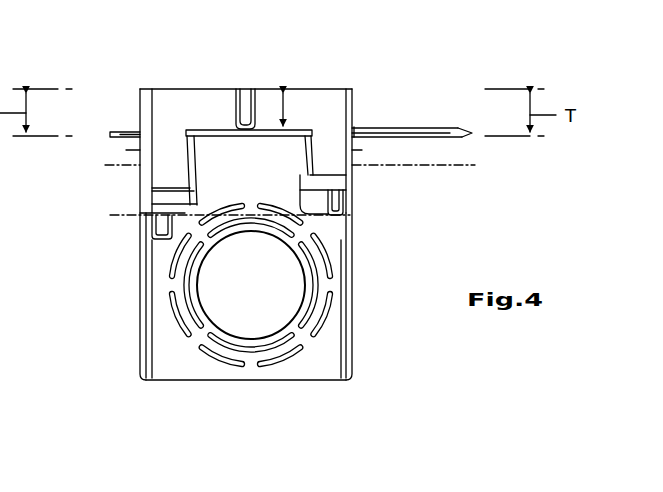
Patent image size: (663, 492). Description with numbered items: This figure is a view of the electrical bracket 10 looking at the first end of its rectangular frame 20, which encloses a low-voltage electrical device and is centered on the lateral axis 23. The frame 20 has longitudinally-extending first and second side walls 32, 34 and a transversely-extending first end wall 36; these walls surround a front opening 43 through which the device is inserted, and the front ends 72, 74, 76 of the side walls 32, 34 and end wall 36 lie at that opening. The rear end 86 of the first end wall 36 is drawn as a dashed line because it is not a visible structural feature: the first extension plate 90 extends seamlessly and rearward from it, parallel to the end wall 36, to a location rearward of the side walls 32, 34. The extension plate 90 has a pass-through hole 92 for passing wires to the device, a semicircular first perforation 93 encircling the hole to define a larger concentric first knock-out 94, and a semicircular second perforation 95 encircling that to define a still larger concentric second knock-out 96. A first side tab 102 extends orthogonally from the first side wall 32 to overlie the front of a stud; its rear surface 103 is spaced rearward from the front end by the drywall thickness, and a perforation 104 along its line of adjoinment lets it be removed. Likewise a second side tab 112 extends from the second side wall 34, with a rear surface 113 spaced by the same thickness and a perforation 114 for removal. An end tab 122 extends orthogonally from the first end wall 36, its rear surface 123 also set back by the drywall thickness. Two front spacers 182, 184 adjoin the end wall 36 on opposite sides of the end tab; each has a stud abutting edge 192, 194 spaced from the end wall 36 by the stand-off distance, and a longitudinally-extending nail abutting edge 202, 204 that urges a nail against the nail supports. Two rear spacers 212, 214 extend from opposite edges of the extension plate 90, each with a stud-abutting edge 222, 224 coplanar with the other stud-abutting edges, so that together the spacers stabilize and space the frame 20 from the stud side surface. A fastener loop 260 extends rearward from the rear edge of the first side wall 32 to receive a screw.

The electrical bracket 10 is at (483, 33).
The rectangular frame 20 is at (357, 88).
The lateral axis 23 is at (420, 167).
The first side wall 32 is at (150, 160).
The second side wall 34 is at (355, 150).
The first end wall 36 is at (190, 120).
The front opening 43 is at (300, 88).
The front end 72 is at (147, 89).
The front end 74 is at (345, 88).
The front end 76 is at (197, 89).
The rear end 86 is at (195, 213).
The first extension plate 90 is at (173, 365).
The pass-through hole 92 is at (219, 322).
The first perforation 93 is at (230, 352).
The first knock-out 94 is at (250, 342).
The second perforation 95 is at (293, 363).
The second knock-out 96 is at (302, 348).
The first side tab 102 is at (120, 133).
The rear surface 103 is at (138, 150).
The perforation 104 is at (138, 132).
The second side tab 112 is at (417, 128).
The rear surface 113 is at (447, 133).
The perforation 114 is at (357, 127).
The end tab 122 is at (267, 130).
The rear surface 123 is at (222, 132).
The front spacer 182 is at (187, 183).
The front spacer 184 is at (318, 160).
The stud abutting edge 192 is at (193, 187).
The stud abutting edge 194 is at (315, 178).
The nail abutting edge 202 is at (147, 213).
The nail abutting edge 204 is at (318, 190).
The rear spacer 212 is at (143, 338).
The rear spacer 214 is at (350, 333).
The stud-abutting edge 222 is at (148, 362).
The stud-abutting edge 224 is at (345, 355).
The fastener loop 260 is at (138, 250).